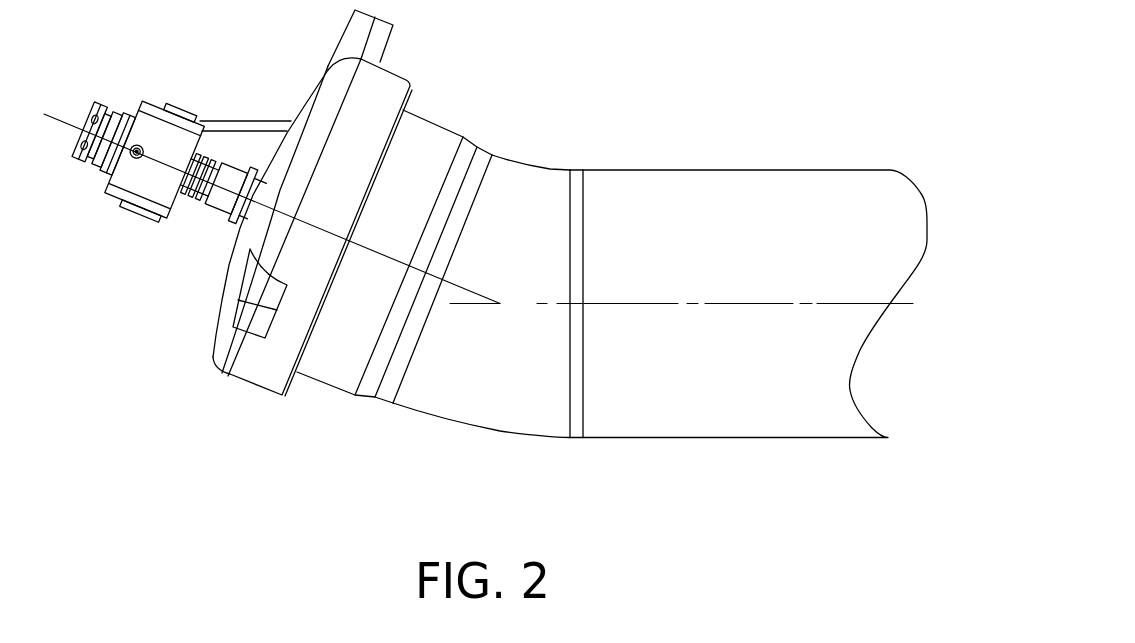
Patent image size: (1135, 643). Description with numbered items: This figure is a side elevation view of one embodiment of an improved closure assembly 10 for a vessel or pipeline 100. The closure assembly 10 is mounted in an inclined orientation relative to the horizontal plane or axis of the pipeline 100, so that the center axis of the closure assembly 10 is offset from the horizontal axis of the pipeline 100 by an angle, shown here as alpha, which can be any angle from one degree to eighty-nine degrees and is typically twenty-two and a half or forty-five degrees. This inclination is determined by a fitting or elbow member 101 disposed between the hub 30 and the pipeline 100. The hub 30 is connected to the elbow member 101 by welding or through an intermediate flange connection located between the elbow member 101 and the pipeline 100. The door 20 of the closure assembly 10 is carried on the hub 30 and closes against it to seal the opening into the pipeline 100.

The closure assembly 10 is at (231, 65).
The door 20 is at (253, 389).
The hub 30 is at (365, 396).
The pipeline 100 is at (725, 438).
The elbow member 101 is at (508, 435).